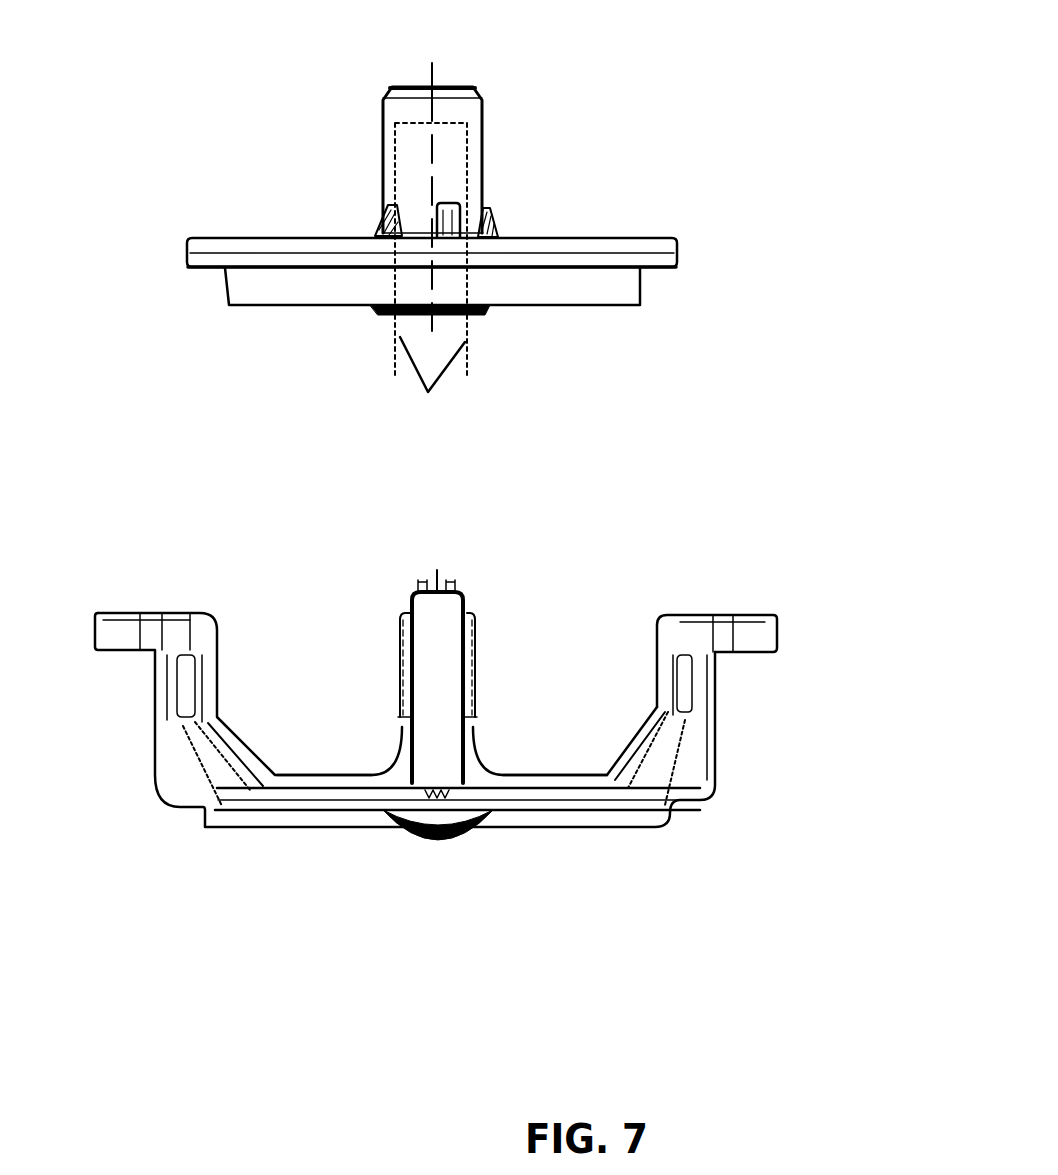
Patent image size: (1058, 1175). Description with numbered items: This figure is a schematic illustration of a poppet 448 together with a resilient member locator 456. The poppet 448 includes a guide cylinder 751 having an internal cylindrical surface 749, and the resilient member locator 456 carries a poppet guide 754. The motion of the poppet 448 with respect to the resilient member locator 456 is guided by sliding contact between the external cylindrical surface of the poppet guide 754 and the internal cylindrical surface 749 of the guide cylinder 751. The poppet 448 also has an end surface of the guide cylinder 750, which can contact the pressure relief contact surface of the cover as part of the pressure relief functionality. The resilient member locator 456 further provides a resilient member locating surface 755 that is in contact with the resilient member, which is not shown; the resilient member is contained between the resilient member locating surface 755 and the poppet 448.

The end surface of the guide cylinder 750 is at (453, 82).
The guide cylinder 751 is at (482, 163).
The poppet 448 is at (677, 258).
The internal cylindrical surface 749 is at (428, 391).
The poppet guide 754 is at (478, 633).
The resilient member locating surface 755 is at (557, 778).
The resilient member locator 456 is at (773, 642).